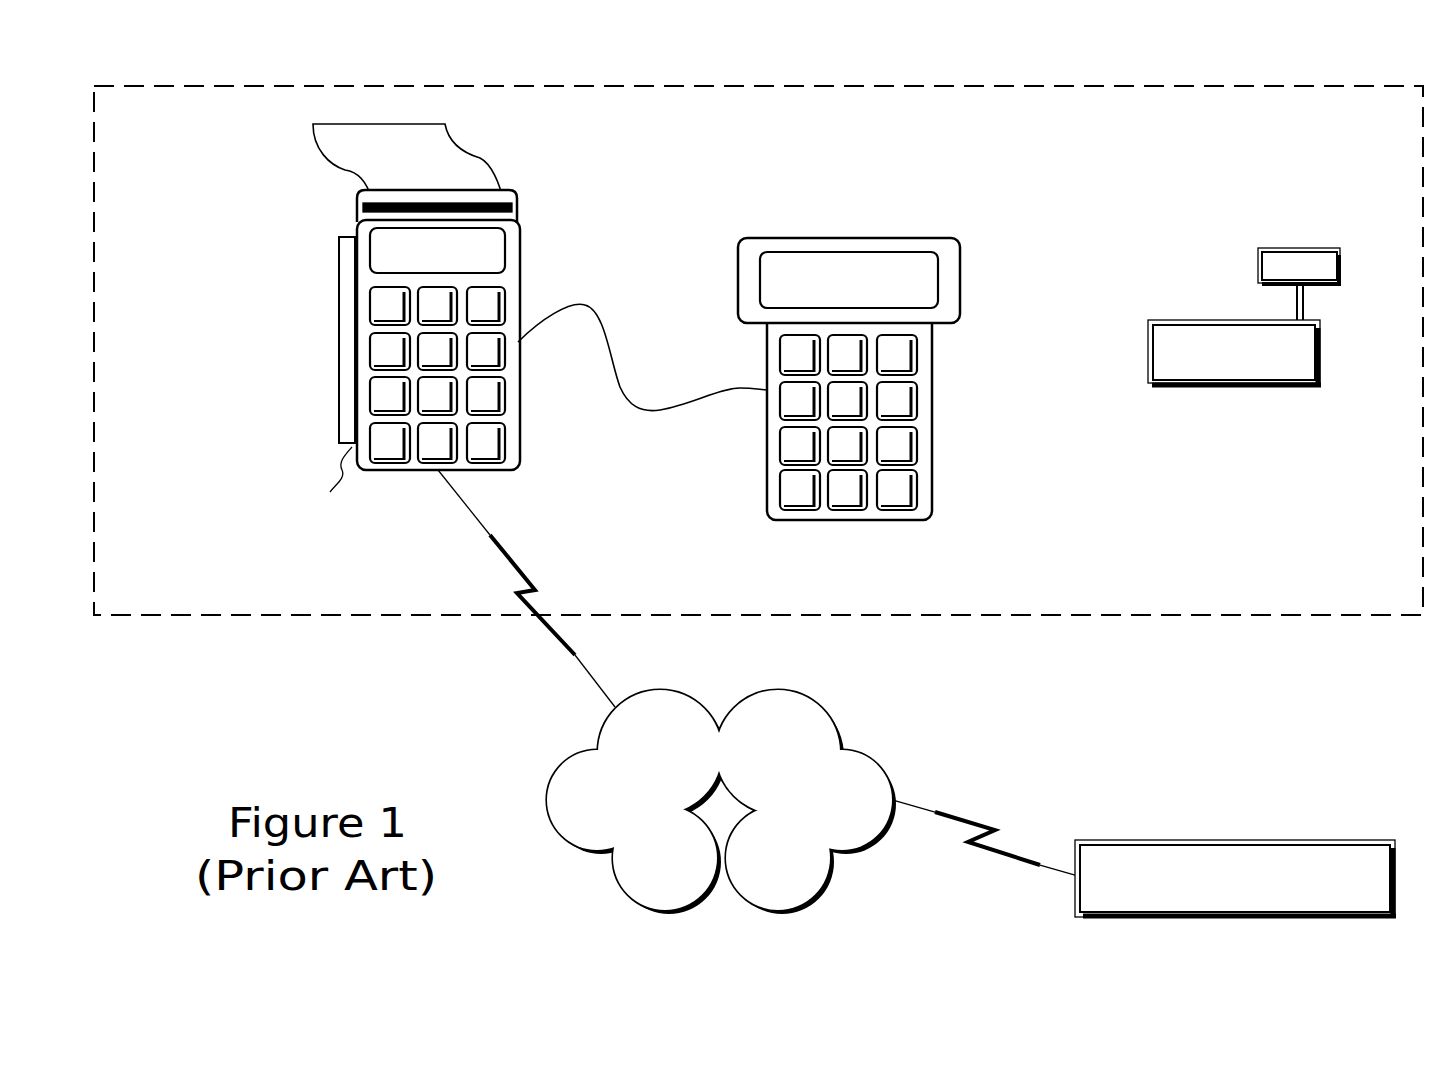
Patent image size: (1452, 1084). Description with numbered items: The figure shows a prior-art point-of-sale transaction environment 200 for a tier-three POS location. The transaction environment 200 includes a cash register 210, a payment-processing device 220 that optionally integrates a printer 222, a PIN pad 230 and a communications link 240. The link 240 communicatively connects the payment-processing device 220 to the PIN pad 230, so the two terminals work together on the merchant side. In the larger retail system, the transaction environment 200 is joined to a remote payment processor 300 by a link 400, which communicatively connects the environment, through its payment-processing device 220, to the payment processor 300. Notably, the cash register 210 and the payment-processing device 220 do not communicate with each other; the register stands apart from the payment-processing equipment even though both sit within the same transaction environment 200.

The POS transaction environment 200 is at (455, 615).
The cash register 210 is at (1270, 386).
The payment-processing device 220 is at (518, 472).
The printer 222 is at (355, 210).
The PIN pad 230 is at (850, 520).
The communications link 240 is at (655, 413).
The payment processor 300 is at (1235, 879).
The link 400 is at (721, 802).